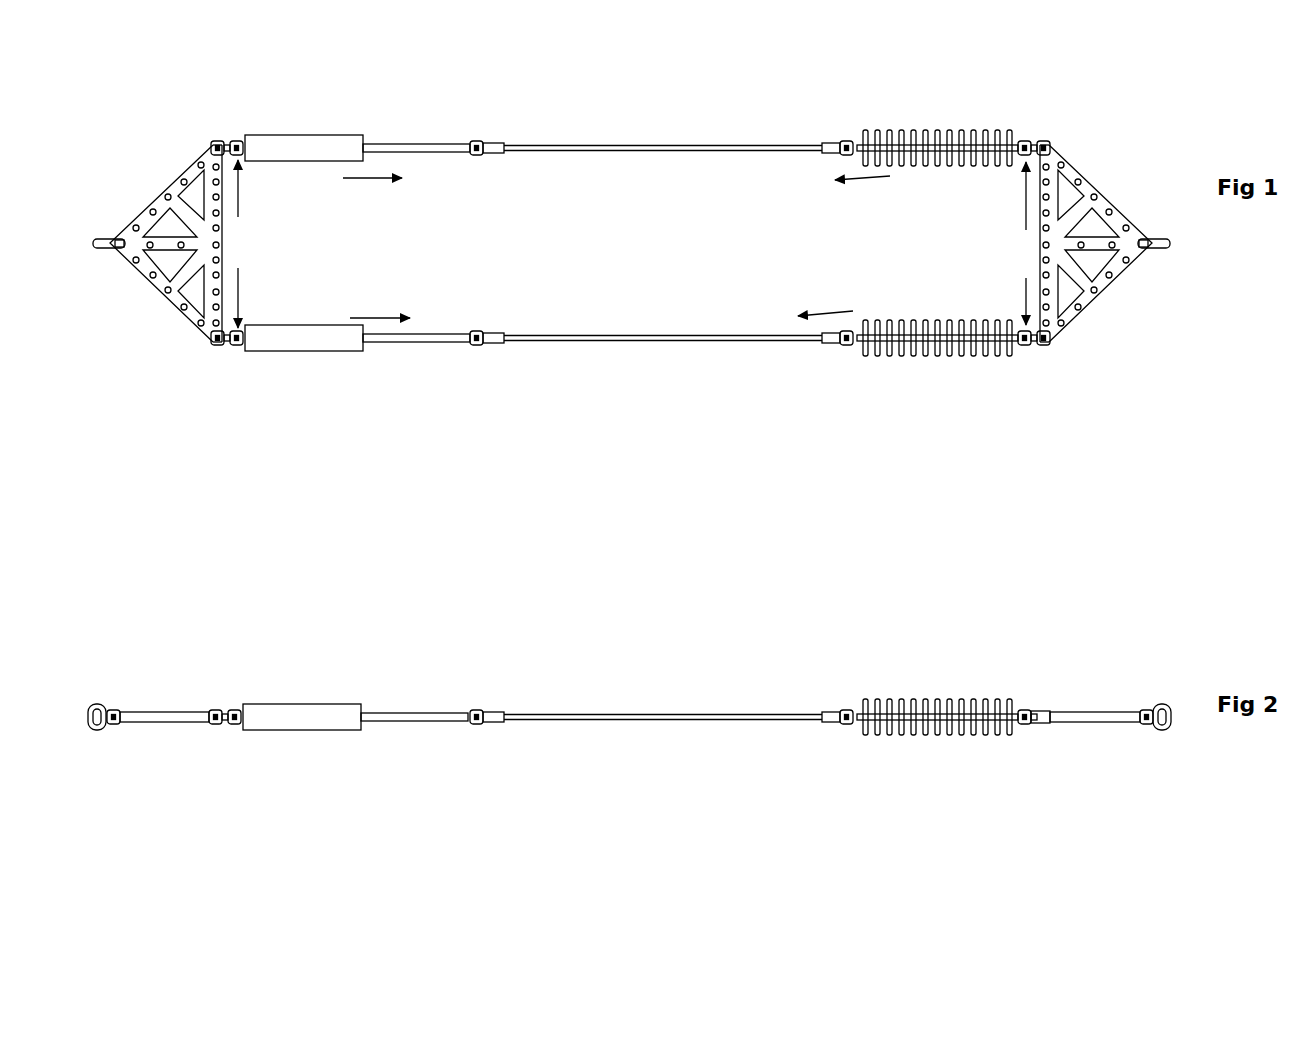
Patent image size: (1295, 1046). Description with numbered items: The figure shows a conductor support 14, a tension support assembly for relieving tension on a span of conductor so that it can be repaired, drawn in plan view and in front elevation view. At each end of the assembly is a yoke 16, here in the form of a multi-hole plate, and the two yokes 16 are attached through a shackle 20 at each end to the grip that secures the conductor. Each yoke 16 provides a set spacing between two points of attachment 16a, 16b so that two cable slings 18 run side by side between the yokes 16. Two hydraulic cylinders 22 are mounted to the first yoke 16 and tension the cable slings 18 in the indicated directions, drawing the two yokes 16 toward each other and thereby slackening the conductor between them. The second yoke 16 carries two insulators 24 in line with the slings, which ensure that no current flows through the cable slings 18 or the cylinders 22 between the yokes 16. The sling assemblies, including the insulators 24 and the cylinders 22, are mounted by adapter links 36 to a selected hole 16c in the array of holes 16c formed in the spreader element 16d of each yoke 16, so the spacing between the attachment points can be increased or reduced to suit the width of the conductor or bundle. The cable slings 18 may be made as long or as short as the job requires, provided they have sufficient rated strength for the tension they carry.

In FIG. 1, the conductor support 14 is at (898, 114).
In FIG. 2, the conductor support 14 is at (730, 778).
In FIG. 1, the yoke 16 is at (159, 186).
In FIG. 2, the yoke 16 is at (166, 552).
In FIG. 1, the point of attachment 16a is at (213, 142).
In FIG. 1, the point of attachment 16b is at (212, 344).
In FIG. 1, the hole 16c is at (219, 227).
In FIG. 1, the spreader element 16d is at (203, 207).
In FIG. 1, the cable sling 18 is at (648, 145).
In FIG. 2, the cable sling 18 is at (656, 712).
In FIG. 1, the shackle 20 is at (97, 237).
In FIG. 2, the shackle 20 is at (97, 702).
In FIG. 1, the hydraulic cylinder 22 is at (310, 130).
In FIG. 2, the hydraulic cylinder 22 is at (332, 701).
In FIG. 1, the insulator 24 is at (972, 130).
In FIG. 2, the insulator 24 is at (937, 698).
In FIG. 1, the adapter link 36 is at (224, 352).
In FIG. 2, the adapter link 36 is at (224, 704).